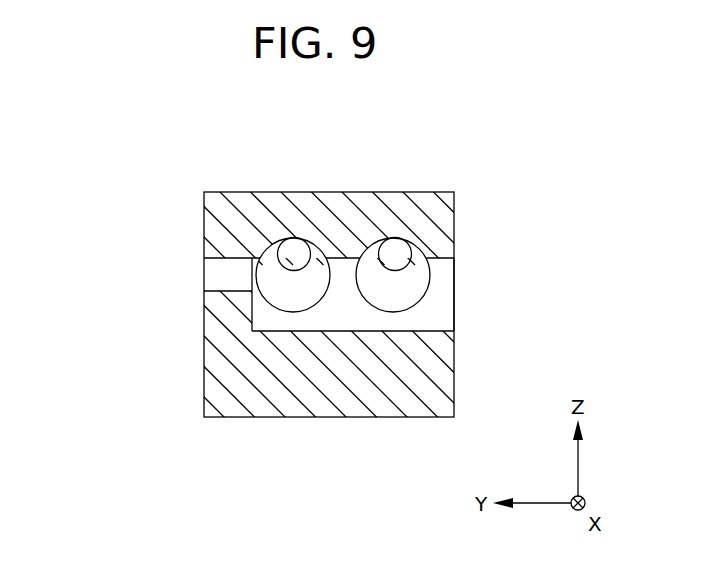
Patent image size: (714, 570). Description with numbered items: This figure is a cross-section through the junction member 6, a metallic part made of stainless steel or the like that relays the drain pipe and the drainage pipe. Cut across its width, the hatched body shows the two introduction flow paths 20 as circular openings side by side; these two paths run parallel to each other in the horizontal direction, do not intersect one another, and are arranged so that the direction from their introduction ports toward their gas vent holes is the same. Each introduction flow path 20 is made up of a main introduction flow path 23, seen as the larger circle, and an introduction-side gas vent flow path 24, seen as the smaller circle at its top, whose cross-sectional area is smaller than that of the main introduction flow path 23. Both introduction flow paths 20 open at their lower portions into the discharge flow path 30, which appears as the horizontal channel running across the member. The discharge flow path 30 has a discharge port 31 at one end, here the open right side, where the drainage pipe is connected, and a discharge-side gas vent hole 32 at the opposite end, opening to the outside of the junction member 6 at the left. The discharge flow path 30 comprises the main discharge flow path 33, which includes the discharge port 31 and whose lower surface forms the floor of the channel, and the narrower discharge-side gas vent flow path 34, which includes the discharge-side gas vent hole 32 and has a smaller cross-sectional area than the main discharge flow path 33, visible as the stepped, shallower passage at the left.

The junction member 6 is at (205, 192).
The introduction flow path 20 is at (271, 308).
The main introduction flow path 23 is at (300, 311).
The introduction-side gas vent flow path 24 is at (318, 248).
The discharge flow path 30 is at (344, 258).
The discharge port 31 is at (454, 282).
The discharge-side gas vent hole 32 is at (204, 278).
The main discharge flow path 33 is at (315, 331).
The discharge-side gas vent flow path 34 is at (237, 290).